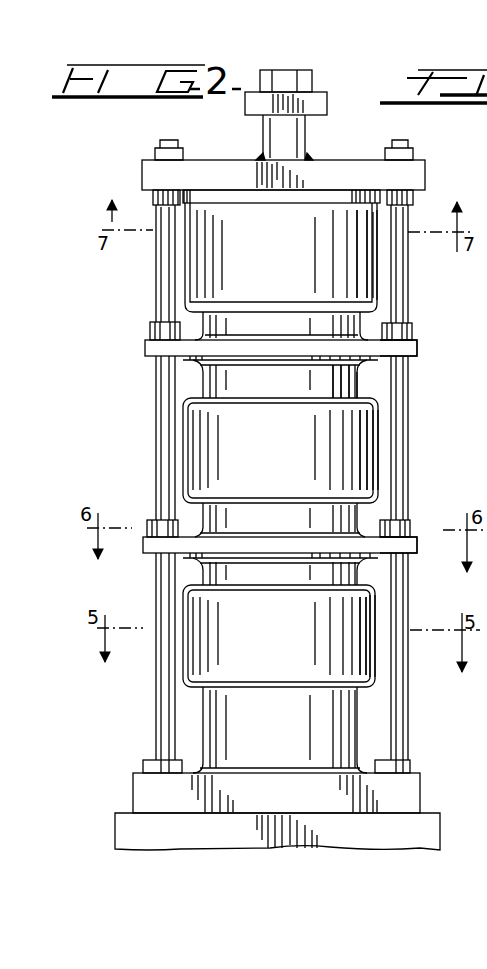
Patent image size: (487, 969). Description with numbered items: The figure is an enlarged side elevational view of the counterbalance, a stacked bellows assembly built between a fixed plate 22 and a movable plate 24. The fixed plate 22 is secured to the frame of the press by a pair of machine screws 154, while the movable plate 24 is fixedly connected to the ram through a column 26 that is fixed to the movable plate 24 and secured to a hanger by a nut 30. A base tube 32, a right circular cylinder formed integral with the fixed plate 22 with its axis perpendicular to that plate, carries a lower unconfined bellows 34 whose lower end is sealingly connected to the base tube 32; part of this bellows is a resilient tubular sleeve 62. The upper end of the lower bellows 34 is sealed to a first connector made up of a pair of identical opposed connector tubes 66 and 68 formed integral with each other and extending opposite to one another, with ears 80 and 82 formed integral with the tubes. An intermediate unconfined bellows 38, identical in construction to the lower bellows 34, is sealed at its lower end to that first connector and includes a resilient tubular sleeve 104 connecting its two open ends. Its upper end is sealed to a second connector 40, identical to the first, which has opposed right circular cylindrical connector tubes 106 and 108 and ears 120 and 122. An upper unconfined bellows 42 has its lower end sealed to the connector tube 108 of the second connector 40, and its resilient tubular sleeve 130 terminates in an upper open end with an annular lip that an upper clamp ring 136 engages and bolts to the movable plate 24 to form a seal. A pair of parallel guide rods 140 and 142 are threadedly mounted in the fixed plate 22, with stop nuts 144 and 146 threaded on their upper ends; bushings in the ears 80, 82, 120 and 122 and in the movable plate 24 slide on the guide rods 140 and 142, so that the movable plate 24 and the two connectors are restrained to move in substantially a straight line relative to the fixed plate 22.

The fixed plate 22 is at (408, 800).
The movable plate 24 is at (206, 168).
The column 26 is at (290, 135).
The nut 30 is at (302, 82).
The base tube 32 is at (358, 719).
The lower unconfined bellows 34 is at (181, 656).
The intermediate unconfined bellows 38 is at (182, 442).
The second connector 40 is at (200, 374).
The upper unconfined bellows 42 is at (186, 244).
The resilient tubular sleeve 62 is at (358, 662).
The connector tube 66 is at (345, 578).
The connector tube 68 is at (212, 520).
The ear 80 is at (147, 545).
The ear 82 is at (412, 545).
The resilient tubular sleeve 104 is at (368, 434).
The connector tube 106 is at (345, 380).
The connector tube 108 is at (206, 321).
The ear 120 is at (150, 351).
The ear 122 is at (412, 351).
The resilient tubular sleeve 130 is at (365, 278).
The upper clamp ring 136 is at (158, 200).
The guide rod 140 is at (163, 276).
The guide rod 142 is at (400, 294).
The stop nut 144 is at (155, 150).
The stop nut 146 is at (413, 152).
The machine screws 154 is at (148, 767).